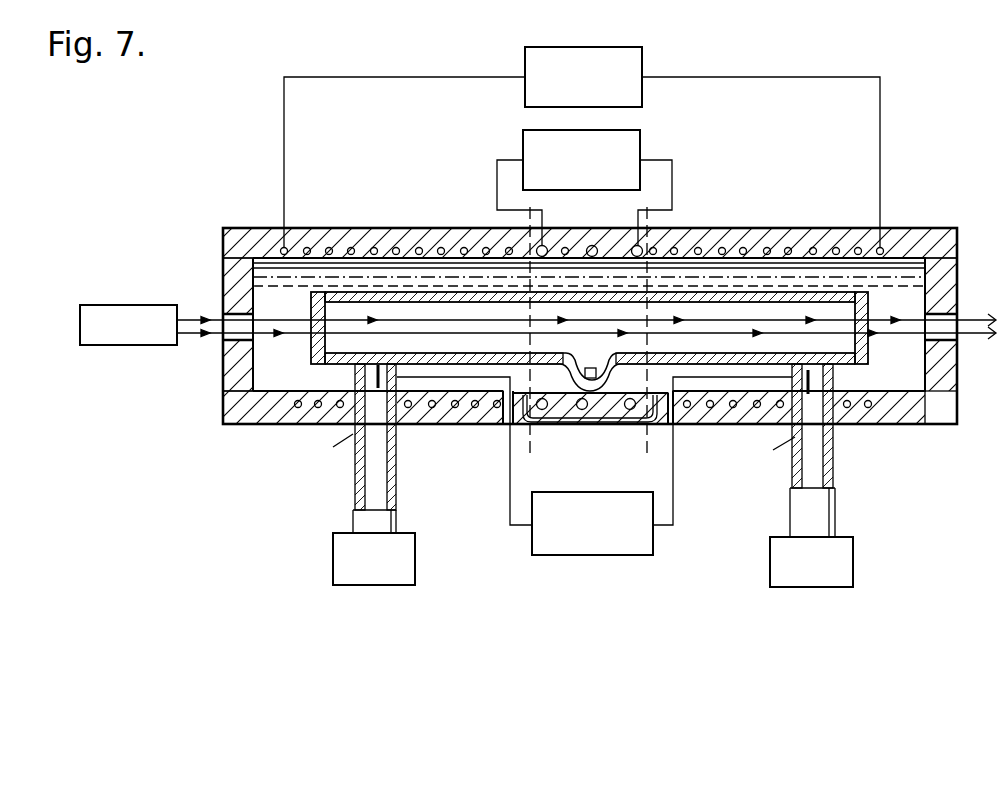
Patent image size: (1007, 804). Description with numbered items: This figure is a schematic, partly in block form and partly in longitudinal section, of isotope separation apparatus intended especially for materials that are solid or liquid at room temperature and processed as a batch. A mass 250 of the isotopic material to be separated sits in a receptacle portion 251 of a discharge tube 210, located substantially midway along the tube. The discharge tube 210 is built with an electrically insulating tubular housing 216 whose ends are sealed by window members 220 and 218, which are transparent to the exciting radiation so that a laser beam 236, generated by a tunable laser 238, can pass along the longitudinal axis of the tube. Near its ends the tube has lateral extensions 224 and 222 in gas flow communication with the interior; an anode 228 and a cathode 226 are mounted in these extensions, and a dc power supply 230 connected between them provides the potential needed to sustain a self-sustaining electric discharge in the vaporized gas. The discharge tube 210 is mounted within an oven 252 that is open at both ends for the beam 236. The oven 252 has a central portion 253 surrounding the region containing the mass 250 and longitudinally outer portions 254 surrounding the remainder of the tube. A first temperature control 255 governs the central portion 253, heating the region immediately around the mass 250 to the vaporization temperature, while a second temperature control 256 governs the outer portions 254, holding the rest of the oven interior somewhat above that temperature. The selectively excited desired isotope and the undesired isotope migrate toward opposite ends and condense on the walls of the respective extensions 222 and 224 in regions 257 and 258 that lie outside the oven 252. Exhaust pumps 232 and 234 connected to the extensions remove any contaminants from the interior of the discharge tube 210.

The discharge tube 210 is at (714, 296).
The tubular housing 216 is at (670, 358).
The window member 218 is at (872, 350).
The window member 220 is at (309, 351).
The discharge tube extension 222 is at (834, 448).
The discharge tube extension 224 is at (397, 490).
The cathode 226 is at (828, 375).
The anode 228 is at (364, 374).
The dc power supply 230 is at (533, 551).
The exhaust pump 232 is at (852, 587).
The exhaust pump 234 is at (333, 584).
The laser beam 236 is at (192, 338).
The tunable laser 238 is at (83, 343).
The mass of isotopic material 250 is at (592, 380).
The receptacle portion 251 is at (572, 372).
The oven 252 is at (907, 226).
The central portion of oven 253 is at (566, 231).
The outer portions of oven 254 is at (406, 230).
The first temperature control 255 is at (633, 140).
The second temperature control 256 is at (636, 53).
The condensation region 257 is at (820, 455).
The condensation region 258 is at (384, 458).